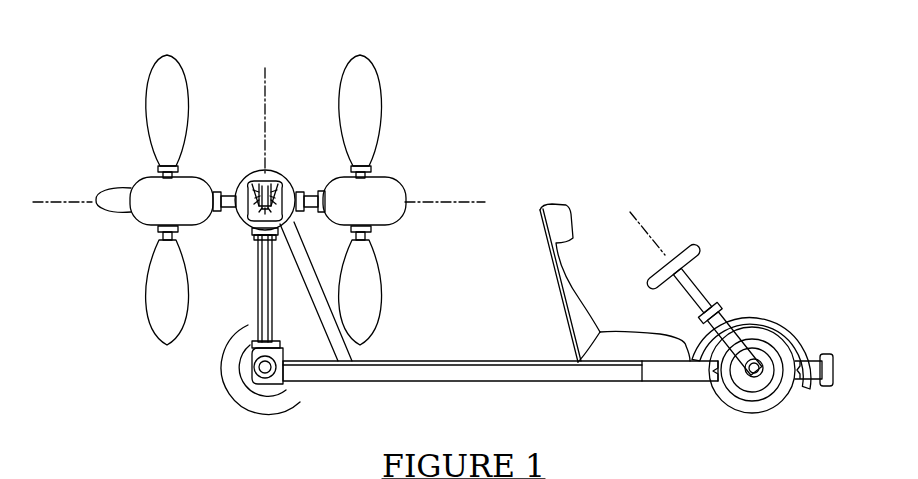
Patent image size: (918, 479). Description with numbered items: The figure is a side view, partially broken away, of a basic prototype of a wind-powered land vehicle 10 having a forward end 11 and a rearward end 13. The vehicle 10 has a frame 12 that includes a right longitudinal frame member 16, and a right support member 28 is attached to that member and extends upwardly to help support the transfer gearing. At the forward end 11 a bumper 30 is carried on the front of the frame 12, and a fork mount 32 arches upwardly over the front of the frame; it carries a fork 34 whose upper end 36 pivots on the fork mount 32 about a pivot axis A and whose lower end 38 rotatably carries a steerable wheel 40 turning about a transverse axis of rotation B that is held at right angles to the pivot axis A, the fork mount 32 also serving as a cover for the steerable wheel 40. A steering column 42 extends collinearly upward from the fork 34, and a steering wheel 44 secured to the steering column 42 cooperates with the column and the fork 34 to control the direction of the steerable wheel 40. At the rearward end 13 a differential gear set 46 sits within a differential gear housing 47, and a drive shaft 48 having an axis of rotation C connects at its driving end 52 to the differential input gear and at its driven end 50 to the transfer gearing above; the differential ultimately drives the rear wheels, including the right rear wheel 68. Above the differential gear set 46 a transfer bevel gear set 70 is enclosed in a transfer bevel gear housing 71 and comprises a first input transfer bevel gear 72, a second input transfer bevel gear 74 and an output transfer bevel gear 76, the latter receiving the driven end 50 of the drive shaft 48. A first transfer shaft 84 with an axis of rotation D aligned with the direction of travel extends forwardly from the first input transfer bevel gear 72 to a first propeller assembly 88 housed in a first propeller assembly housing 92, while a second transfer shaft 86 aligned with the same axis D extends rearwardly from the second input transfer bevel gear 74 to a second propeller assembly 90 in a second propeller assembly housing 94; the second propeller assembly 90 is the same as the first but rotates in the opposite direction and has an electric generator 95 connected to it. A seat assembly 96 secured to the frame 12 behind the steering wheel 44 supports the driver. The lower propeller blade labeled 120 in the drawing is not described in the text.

The wind-powered land vehicle 10 is at (535, 116).
The forward end 11 is at (841, 327).
The frame 12 is at (410, 400).
The rearward end 13 is at (198, 378).
The right longitudinal frame member 16 is at (562, 382).
The right support member 28 is at (380, 357).
The bumper 30 is at (826, 388).
The fork mount 32 is at (776, 305).
The fork 34 is at (740, 362).
The upper end 36 is at (732, 332).
The lower end 38 is at (735, 372).
The steerable wheel 40 is at (753, 418).
The steering column 42 is at (703, 275).
The steering wheel 44 is at (698, 242).
The differential gear set 46 is at (292, 349).
The differential gear housing 47 is at (282, 345).
The drive shaft 48 is at (259, 300).
The driven end 50 is at (258, 242).
The driving end 52 is at (254, 330).
The right rear wheel 68 is at (263, 416).
The transfer bevel gear set 70 is at (250, 160).
The transfer bevel gear housing 71 is at (287, 182).
The first input transfer bevel gear 72 is at (278, 186).
The second input transfer bevel gear 74 is at (248, 192).
The output transfer bevel gear 76 is at (268, 190).
The first transfer shaft 84 is at (310, 212).
The second transfer shaft 86 is at (230, 229).
The first propeller assembly 88 is at (414, 154).
The second propeller assembly 90 is at (138, 142).
The first propeller assembly housing 92 is at (405, 193).
The second propeller assembly housing 94 is at (145, 178).
The electric generator 95 is at (110, 214).
The seat assembly 96 is at (594, 256).
The right rotor lower blade 120 is at (387, 270).
The pivot axis A is at (643, 203).
The axis of rotation B is at (755, 370).
The axis of rotation C is at (265, 68).
The axis of rotation D is at (48, 197).